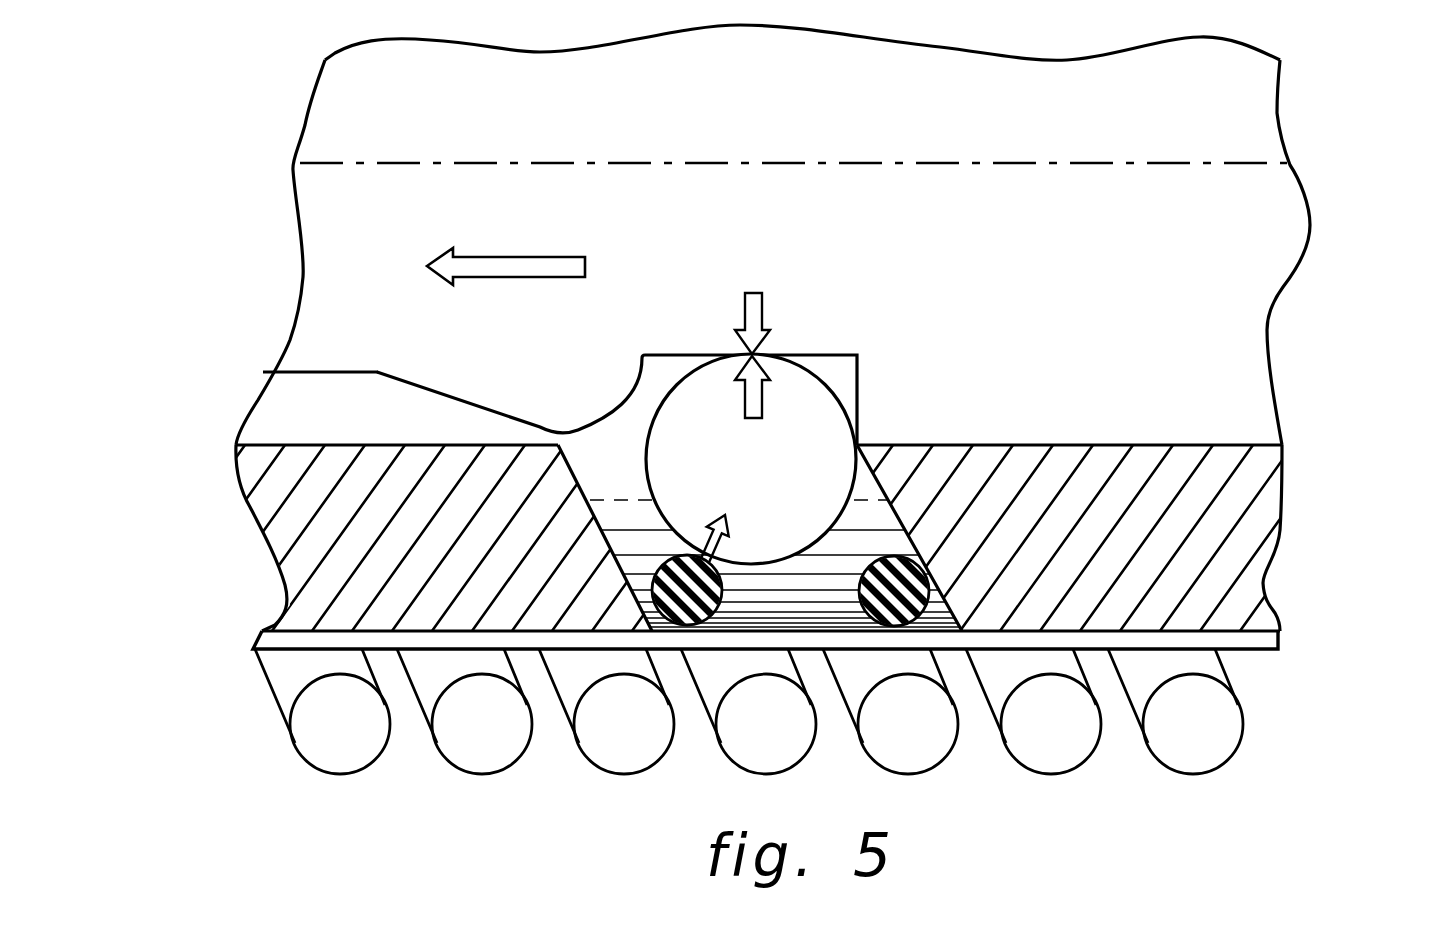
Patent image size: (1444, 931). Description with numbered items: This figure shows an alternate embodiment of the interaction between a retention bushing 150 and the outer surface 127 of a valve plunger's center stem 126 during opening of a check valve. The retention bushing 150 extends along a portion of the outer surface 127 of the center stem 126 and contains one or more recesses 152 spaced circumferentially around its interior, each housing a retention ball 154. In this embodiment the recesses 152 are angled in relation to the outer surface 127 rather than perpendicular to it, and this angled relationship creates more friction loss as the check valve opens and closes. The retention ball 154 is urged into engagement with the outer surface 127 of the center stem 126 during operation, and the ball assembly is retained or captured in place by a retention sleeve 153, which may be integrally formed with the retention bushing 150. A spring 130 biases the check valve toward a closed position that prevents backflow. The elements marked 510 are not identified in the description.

The center stem 126 is at (521, 361).
The outer surface 127 is at (320, 372).
The spring 130 is at (348, 744).
The retention bushing 150 is at (340, 565).
The recess 152 is at (780, 587).
The retention sleeve 153 is at (1278, 635).
The retention ball 154 is at (827, 390).
The small balls 510 is at (652, 597).